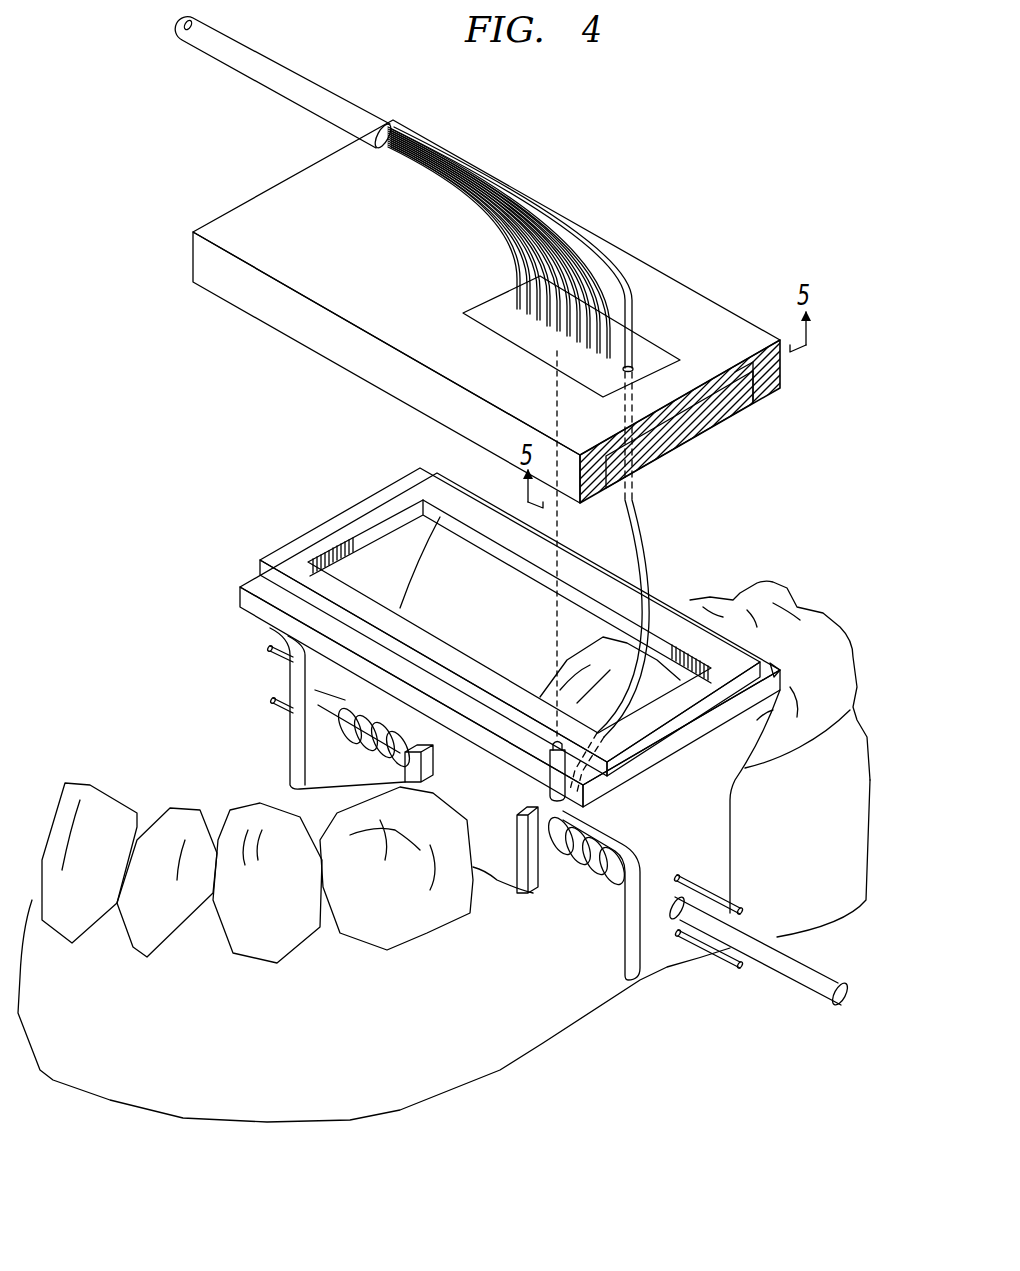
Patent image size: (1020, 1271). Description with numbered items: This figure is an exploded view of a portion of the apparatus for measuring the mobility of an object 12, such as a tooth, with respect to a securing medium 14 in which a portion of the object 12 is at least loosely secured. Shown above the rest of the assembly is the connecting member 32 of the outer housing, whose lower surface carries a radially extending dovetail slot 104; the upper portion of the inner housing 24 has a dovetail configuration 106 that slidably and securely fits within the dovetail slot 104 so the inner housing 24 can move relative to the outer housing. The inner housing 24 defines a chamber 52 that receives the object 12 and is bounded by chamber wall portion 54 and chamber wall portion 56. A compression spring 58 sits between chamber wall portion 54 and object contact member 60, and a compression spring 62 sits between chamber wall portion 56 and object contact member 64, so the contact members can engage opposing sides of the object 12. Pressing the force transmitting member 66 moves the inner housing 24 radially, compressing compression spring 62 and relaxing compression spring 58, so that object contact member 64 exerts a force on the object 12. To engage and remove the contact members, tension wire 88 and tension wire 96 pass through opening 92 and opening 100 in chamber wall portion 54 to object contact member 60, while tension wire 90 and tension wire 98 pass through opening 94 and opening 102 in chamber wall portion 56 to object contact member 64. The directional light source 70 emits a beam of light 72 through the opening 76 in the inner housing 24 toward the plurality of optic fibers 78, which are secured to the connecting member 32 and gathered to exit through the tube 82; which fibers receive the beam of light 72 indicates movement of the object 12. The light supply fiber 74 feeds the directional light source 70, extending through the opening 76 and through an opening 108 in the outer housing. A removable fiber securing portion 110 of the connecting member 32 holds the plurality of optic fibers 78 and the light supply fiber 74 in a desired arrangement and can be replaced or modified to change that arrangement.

The object 12 is at (497, 882).
The securing medium 14 is at (410, 1108).
The inner housing 24 is at (797, 700).
The connecting member 32 is at (640, 262).
The chamber 52 is at (578, 900).
The chamber wall portion 54 is at (290, 728).
The chamber wall portion 56 is at (733, 830).
The compression spring 58 is at (375, 765).
The object contact member 60 is at (430, 760).
The compression spring 62 is at (600, 890).
The object contact member 64 is at (530, 890).
The force transmitting member 66 is at (845, 996).
The directional light source 70 is at (548, 795).
The beam of light 72 is at (510, 635).
The light supply fiber 74 is at (632, 492).
The opening 76 is at (388, 550).
The plurality of optic fibers 78 is at (470, 205).
The tube 82 is at (272, 58).
The tension wire 88 is at (272, 652).
The tension wire 90 is at (735, 900).
The opening 92 is at (315, 690).
The opening 94 is at (714, 865).
The tension wire 96 is at (275, 705).
The tension wire 98 is at (725, 963).
The opening 100 is at (347, 722).
The opening 102 is at (706, 977).
The dovetail slot 104 is at (752, 400).
The dovetail configuration 106 is at (790, 637).
The opening 108 is at (630, 366).
The removable fiber securing portion 110 is at (678, 362).